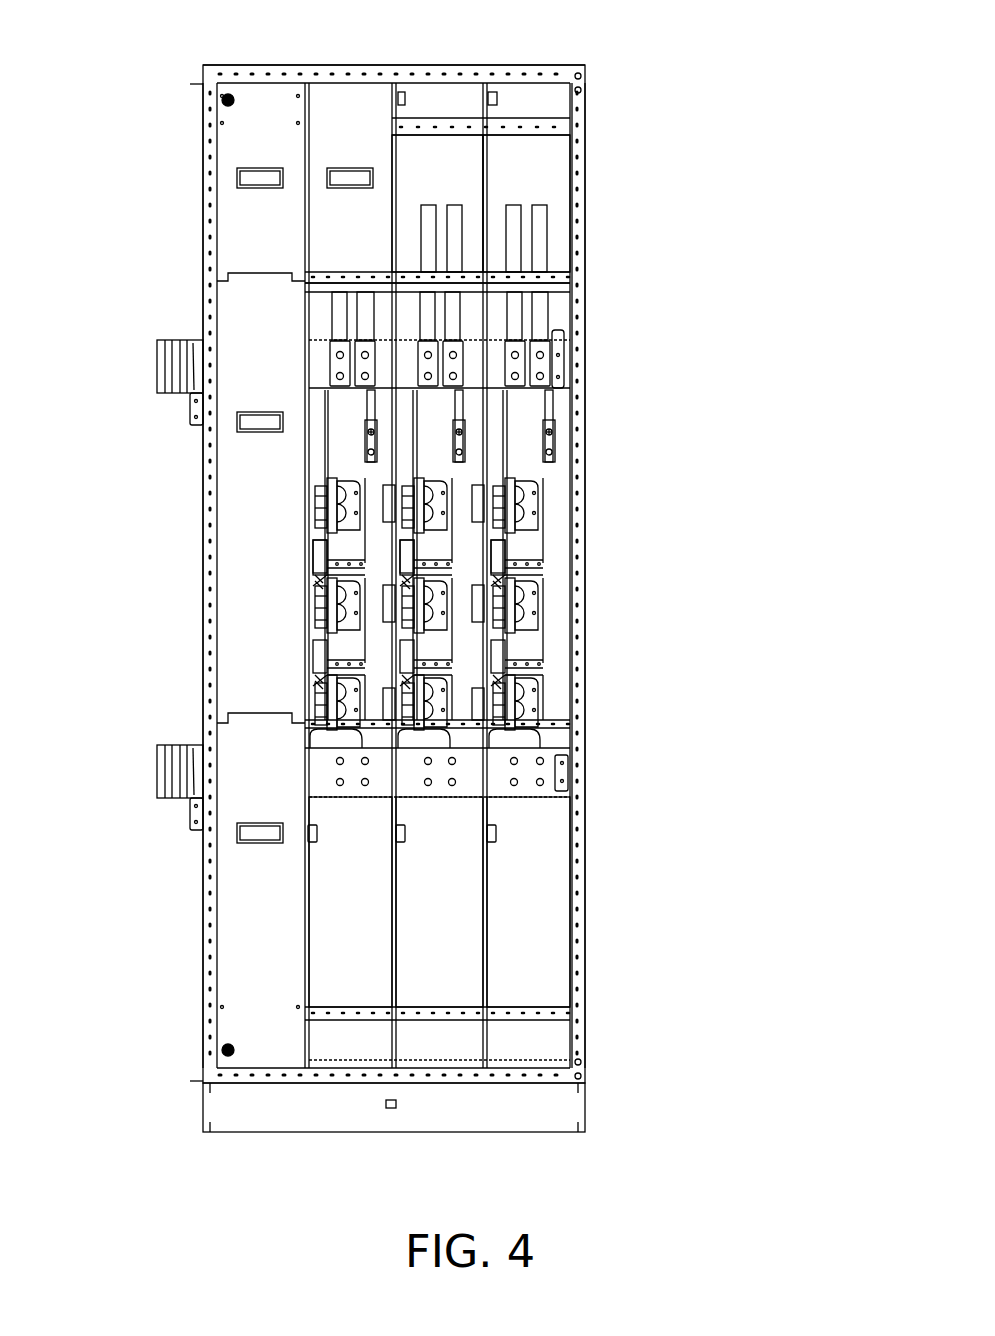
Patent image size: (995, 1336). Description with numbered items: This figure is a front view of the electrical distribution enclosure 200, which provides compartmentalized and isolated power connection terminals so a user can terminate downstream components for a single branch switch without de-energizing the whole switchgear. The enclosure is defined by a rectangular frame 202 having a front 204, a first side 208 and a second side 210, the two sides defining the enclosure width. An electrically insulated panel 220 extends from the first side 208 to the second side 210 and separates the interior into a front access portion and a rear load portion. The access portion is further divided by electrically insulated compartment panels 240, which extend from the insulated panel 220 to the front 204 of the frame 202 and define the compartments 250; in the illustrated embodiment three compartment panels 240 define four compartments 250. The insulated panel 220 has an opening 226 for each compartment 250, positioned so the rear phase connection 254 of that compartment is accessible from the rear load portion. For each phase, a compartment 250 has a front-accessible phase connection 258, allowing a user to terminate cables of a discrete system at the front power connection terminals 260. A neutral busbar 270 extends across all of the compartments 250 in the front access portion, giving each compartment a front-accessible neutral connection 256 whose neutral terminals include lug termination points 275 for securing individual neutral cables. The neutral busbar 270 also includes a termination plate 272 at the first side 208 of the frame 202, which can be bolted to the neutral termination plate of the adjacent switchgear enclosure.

The electrical distribution enclosure 200 is at (595, 62).
The rectangular frame 202 is at (585, 125).
The front 204 is at (588, 365).
The first side 208 is at (197, 279).
The second side 210 is at (540, 330).
The electrically insulated panel 220 is at (550, 537).
The opening 226 is at (543, 520).
The electrically insulated compartment panel 240 is at (310, 915).
The compartment 250 is at (470, 178).
The rear phase connection 254 is at (540, 485).
The front-accessible neutral connection 256 is at (563, 345).
The front-accessible phase connection 258 is at (540, 552).
The front power connection terminals 260 is at (548, 430).
The neutral busbar 270 is at (408, 350).
The termination plate 272 is at (168, 340).
The lug termination points 275 is at (462, 215).